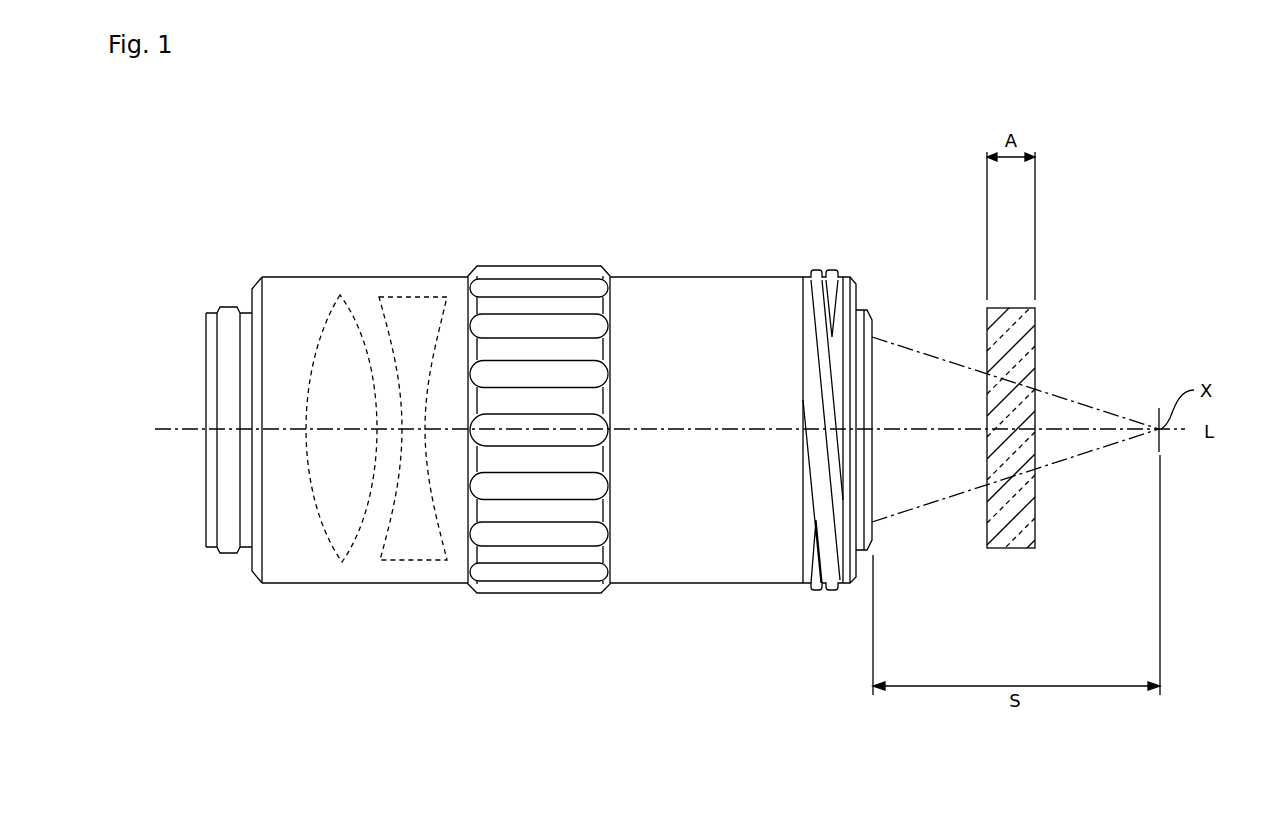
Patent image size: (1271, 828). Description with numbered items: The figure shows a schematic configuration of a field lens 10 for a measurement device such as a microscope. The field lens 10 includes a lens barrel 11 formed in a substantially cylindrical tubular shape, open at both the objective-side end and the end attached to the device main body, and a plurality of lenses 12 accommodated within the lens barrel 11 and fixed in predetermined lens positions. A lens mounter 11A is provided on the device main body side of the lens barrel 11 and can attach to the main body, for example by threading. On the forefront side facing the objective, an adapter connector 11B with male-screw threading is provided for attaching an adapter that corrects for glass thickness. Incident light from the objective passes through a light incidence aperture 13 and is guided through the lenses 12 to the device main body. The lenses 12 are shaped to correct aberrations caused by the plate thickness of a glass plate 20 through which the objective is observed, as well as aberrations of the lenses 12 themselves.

The field lens 10 is at (658, 276).
The lens barrel 11 is at (752, 277).
The lens mounter 11A is at (205, 326).
The adapter connector 11B is at (835, 270).
The lenses 12 is at (408, 297).
The light incidence aperture 13 is at (873, 480).
The glass plate 20 is at (1018, 549).